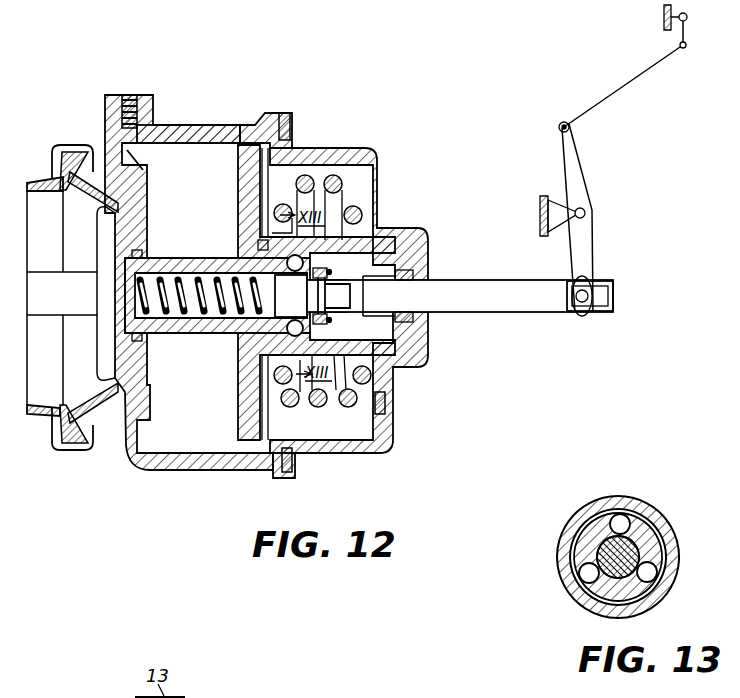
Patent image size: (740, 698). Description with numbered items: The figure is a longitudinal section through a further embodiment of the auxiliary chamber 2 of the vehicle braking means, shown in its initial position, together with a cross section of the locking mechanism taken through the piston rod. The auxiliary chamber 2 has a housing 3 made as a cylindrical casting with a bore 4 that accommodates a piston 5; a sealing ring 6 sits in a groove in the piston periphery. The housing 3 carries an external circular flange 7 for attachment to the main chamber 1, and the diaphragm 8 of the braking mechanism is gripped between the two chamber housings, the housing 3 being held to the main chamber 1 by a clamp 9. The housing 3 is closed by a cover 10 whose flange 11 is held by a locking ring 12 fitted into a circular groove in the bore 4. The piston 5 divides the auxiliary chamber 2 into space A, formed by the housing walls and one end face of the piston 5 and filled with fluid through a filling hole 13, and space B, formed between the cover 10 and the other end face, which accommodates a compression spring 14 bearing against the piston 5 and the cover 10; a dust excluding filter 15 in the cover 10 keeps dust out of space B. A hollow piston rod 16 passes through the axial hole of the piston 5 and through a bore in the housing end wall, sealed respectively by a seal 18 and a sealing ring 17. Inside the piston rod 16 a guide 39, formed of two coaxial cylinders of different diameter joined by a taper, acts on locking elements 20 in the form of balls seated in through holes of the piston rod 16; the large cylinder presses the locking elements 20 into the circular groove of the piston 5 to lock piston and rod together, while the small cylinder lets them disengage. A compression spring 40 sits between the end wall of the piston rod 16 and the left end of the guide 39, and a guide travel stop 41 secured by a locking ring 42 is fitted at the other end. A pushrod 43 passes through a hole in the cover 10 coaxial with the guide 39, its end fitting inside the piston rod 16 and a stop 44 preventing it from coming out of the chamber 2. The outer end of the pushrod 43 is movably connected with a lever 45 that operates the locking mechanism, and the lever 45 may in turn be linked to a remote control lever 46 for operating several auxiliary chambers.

In FIG. 12, the main chamber 1 is at (33, 182).
In FIG. 12, the auxiliary chamber 2 is at (271, 479).
In FIG. 12, the housing 3 is at (108, 135).
In FIG. 12, the bore 4 is at (201, 143).
In FIG. 12, the piston 5 is at (246, 190).
In FIG. 13, the piston 5 is at (569, 588).
In FIG. 12, the sealing ring 6 is at (242, 442).
In FIG. 12, the external circular flange 7 is at (104, 412).
In FIG. 12, the diaphragm 8 is at (92, 392).
In FIG. 12, the clamp 9 is at (62, 449).
In FIG. 12, the cover 10 is at (385, 168).
In FIG. 12, the flange 11 is at (293, 453).
In FIG. 12, the locking ring 12 is at (283, 125).
In FIG. 12, the filling hole 13 is at (133, 94).
In FIG. 12, the compression spring 14 is at (323, 207).
In FIG. 12, the dust excluding filter 15 is at (388, 400).
In FIG. 12, the hollow piston rod 16 is at (190, 262).
In FIG. 13, the hollow piston rod 16 is at (652, 530).
In FIG. 12, the sealing ring 17 is at (148, 252).
In FIG. 12, the seal 18 is at (248, 265).
In FIG. 12, the locking elements 20 is at (311, 296).
In FIG. 13, the locking elements 20 is at (655, 594).
In FIG. 12, the guide 39 is at (242, 340).
In FIG. 13, the guide 39 is at (575, 527).
In FIG. 12, the compression spring 40 is at (197, 322).
In FIG. 12, the guide travel stop 41 is at (318, 224).
In FIG. 12, the locking ring 42 is at (352, 396).
In FIG. 12, the pushrod 43 is at (532, 312).
In FIG. 12, the stop 44 is at (370, 296).
In FIG. 12, the lever 45 is at (590, 244).
In FIG. 12, the remote control lever 46 is at (680, 12).
In FIG. 12, the space A is at (165, 145).
In FIG. 12, the space B is at (350, 432).